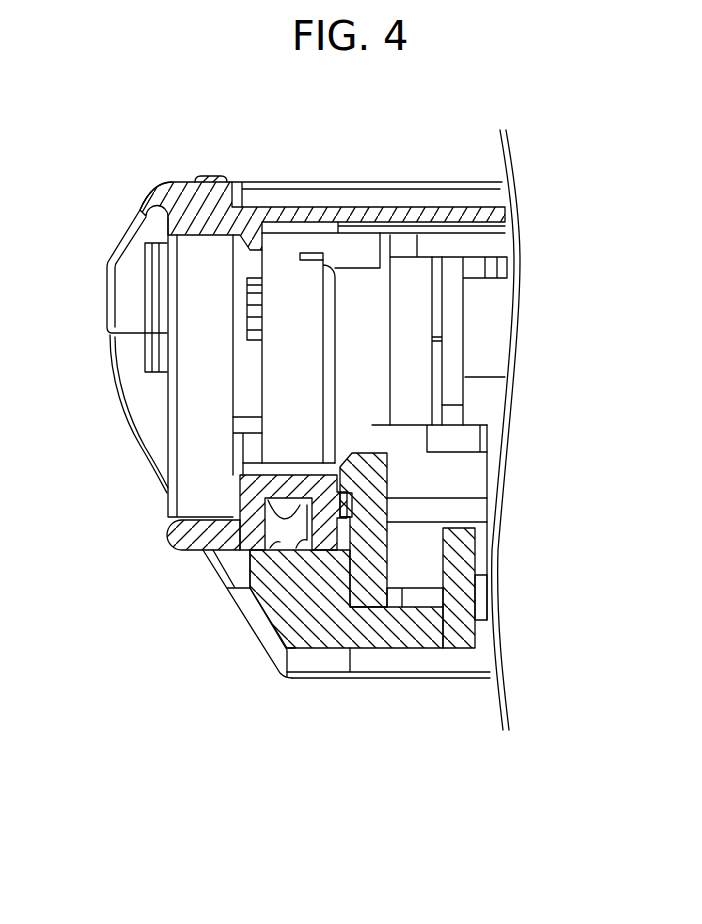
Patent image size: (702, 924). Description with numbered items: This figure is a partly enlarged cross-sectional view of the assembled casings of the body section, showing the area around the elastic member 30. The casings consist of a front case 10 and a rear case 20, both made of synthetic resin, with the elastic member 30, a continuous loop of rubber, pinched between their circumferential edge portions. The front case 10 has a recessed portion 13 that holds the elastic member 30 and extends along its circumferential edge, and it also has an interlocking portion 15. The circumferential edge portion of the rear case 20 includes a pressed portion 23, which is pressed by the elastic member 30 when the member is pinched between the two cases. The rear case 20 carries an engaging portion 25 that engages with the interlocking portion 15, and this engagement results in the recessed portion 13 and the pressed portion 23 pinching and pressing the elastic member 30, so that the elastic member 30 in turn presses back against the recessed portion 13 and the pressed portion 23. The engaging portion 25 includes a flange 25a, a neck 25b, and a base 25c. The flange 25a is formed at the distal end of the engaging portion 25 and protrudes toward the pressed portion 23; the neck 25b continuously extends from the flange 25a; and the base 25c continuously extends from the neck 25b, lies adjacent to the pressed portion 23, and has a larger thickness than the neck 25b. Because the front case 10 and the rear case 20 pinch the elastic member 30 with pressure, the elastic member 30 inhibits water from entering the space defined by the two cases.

The front case 10 is at (167, 542).
The recessed portion 13 is at (265, 516).
The interlocking portion 15 is at (337, 473).
The rear case 20 is at (242, 635).
The pressed portion 23 is at (205, 547).
The engaging portion 25 is at (387, 483).
The flange 25a is at (362, 465).
The neck 25b is at (345, 528).
The base 25c is at (335, 550).
The elastic member 30 is at (263, 514).